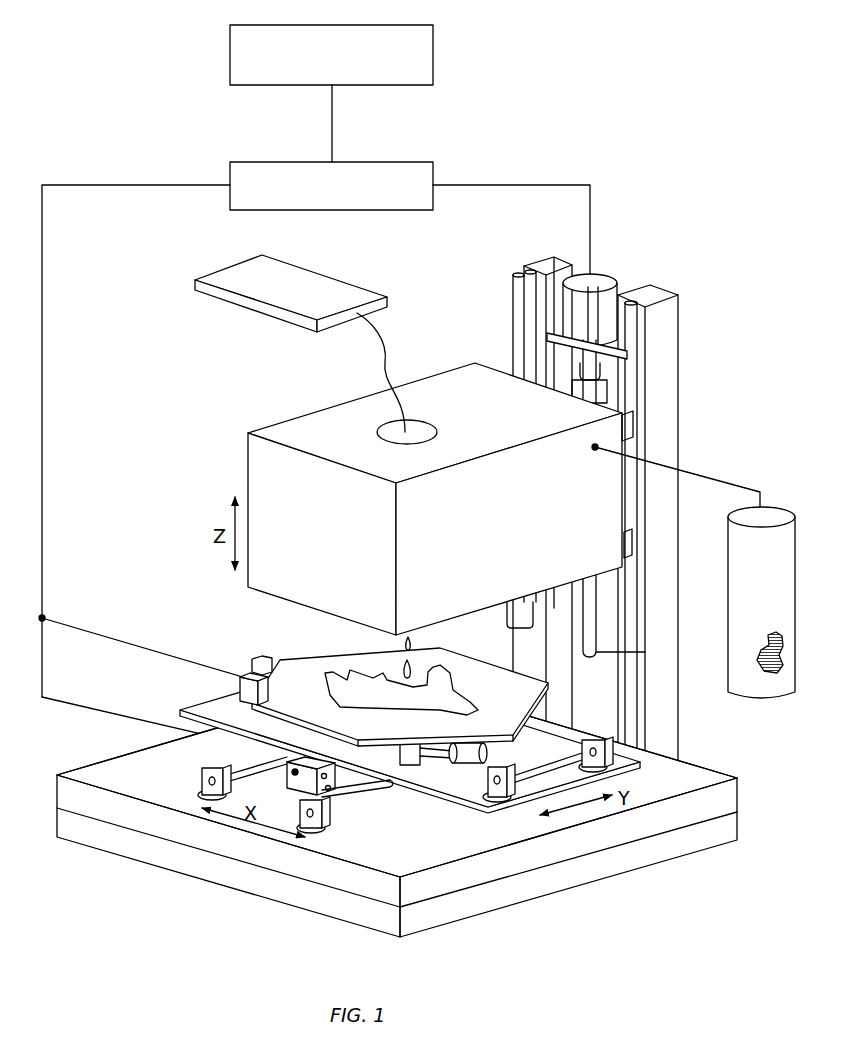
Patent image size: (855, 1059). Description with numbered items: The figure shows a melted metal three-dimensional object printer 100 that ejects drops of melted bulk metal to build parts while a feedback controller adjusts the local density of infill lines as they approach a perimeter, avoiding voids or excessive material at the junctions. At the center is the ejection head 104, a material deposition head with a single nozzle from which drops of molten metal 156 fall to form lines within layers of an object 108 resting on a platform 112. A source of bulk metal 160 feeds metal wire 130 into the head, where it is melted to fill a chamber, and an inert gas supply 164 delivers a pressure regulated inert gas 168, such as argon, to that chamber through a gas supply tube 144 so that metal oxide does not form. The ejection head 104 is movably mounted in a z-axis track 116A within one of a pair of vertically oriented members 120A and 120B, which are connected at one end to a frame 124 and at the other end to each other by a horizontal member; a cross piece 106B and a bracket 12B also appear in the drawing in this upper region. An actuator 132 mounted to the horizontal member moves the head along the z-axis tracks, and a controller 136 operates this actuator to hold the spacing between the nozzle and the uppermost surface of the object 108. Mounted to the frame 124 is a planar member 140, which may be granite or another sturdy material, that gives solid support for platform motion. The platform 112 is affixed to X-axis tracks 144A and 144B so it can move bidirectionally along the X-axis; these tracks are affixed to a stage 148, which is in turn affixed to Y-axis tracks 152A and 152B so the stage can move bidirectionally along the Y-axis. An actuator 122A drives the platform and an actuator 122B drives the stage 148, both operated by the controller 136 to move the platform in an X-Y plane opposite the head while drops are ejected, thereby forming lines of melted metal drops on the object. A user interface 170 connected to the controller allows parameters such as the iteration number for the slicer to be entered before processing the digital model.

The melted metal 3D object printer 100 is at (735, 172).
The ejection head 104 is at (316, 418).
The cross member 106B is at (623, 373).
The object 108 is at (458, 693).
The platform 112 is at (297, 657).
The z-axis track 116A is at (512, 303).
The vertically oriented member 120A is at (521, 345).
The vertically oriented member 120B is at (627, 612).
The actuator 122A is at (243, 693).
The actuator 122B is at (322, 790).
The frame 124 is at (80, 830).
The metal wire 130 is at (383, 362).
The actuator 132 is at (590, 285).
The controller 136 is at (395, 162).
The planar member 140 is at (98, 773).
The gas supply tube 144 is at (722, 478).
The X-axis track 144A is at (293, 772).
The X-axis track 144B is at (357, 805).
The stage 148 is at (217, 708).
The Y-axis track 152A is at (470, 790).
The Y-axis track 152B is at (562, 740).
The drops of molten metal 156 is at (390, 655).
The source of bulk metal 160 is at (315, 282).
The inert gas supply 164 is at (727, 595).
The inert gas 168 is at (772, 672).
The user interface 170 is at (433, 54).
The mounting bracket 12B is at (568, 367).